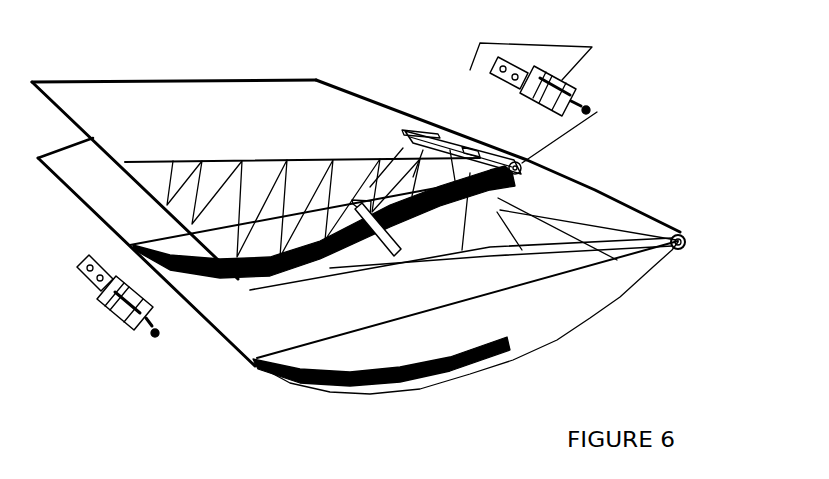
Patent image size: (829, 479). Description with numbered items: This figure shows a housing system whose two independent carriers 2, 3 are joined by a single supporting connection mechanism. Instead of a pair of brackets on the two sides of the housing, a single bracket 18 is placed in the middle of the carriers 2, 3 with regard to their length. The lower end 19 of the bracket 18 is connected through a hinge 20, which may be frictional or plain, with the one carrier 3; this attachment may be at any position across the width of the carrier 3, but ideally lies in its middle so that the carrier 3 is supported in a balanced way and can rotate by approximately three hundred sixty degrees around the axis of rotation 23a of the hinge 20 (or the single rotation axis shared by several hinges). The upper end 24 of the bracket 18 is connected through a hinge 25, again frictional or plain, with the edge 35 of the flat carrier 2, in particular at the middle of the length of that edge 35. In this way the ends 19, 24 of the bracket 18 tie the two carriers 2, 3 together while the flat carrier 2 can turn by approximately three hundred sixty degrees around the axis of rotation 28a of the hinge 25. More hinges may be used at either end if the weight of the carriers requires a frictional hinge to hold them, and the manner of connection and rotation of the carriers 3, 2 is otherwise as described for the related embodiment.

The carrier 2 is at (153, 201).
The carrier 3 is at (654, 281).
The bracket 18 is at (500, 186).
The lower end 19 is at (396, 250).
The hinge 20 is at (251, 297).
The axis of rotation 23a is at (327, 277).
The upper end 24 is at (522, 166).
The hinge 25 is at (486, 148).
The axis of rotation 28a is at (591, 107).
The edge 35 is at (735, 224).